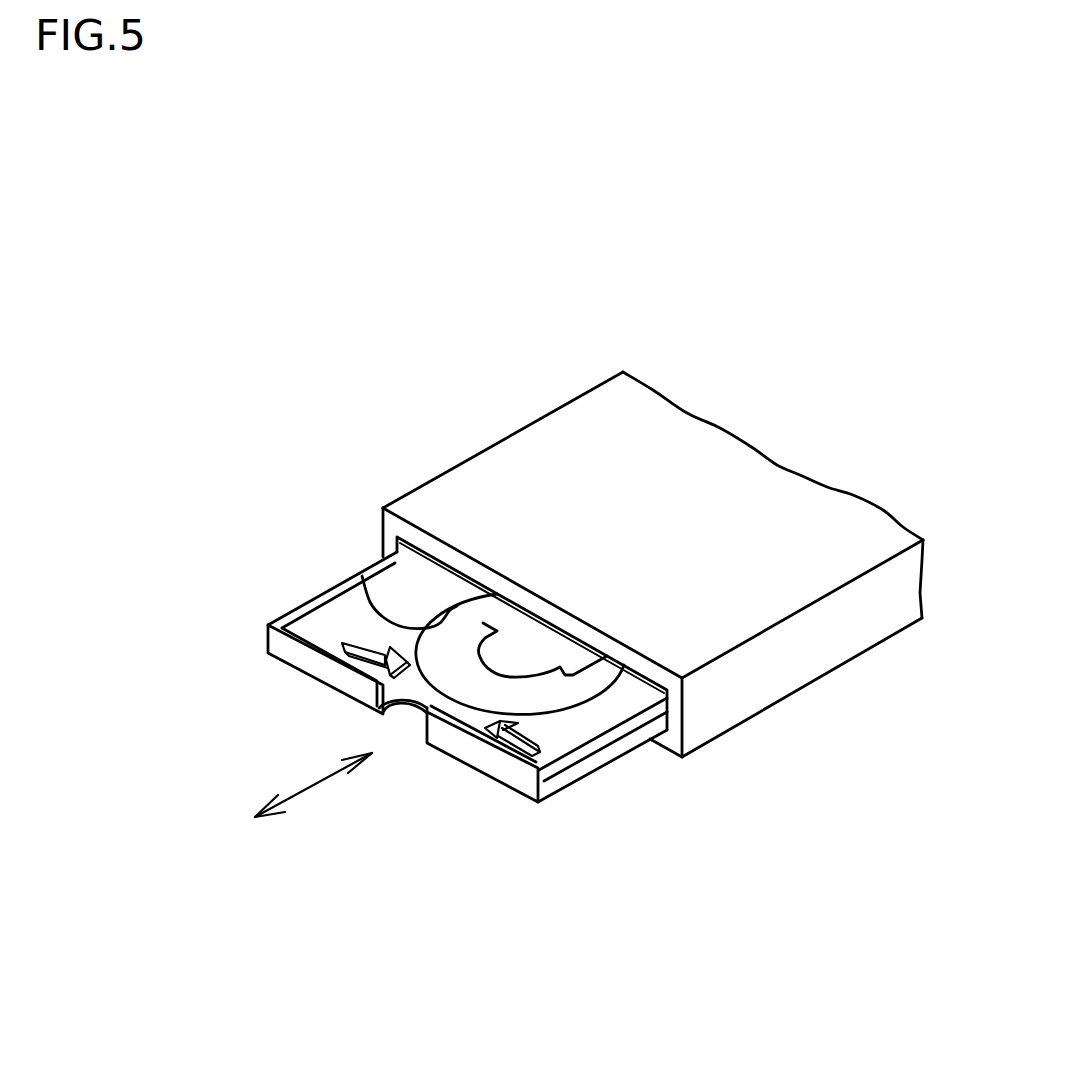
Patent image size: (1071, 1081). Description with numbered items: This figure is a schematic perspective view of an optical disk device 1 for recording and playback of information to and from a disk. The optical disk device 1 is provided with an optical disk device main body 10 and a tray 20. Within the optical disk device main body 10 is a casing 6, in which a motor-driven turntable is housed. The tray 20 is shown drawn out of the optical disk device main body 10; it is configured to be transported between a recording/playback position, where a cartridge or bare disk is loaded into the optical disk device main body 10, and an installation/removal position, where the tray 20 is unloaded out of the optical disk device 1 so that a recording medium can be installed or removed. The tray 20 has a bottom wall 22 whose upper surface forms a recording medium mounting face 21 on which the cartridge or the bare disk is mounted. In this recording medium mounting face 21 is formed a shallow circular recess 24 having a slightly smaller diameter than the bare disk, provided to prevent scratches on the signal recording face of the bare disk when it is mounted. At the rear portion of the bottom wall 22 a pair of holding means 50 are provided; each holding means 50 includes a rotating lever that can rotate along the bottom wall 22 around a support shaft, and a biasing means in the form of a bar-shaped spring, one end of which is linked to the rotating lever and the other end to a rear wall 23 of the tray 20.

The optical disk device 1 is at (473, 325).
The optical disk device main body 10 is at (763, 487).
The casing 6 is at (810, 658).
The tray 20 is at (607, 760).
The recording medium mounting face 21 is at (403, 594).
The bottom wall 22 is at (357, 623).
The rear wall 23 is at (500, 777).
The circular recess 24 is at (347, 582).
The holding means 50 is at (366, 662).